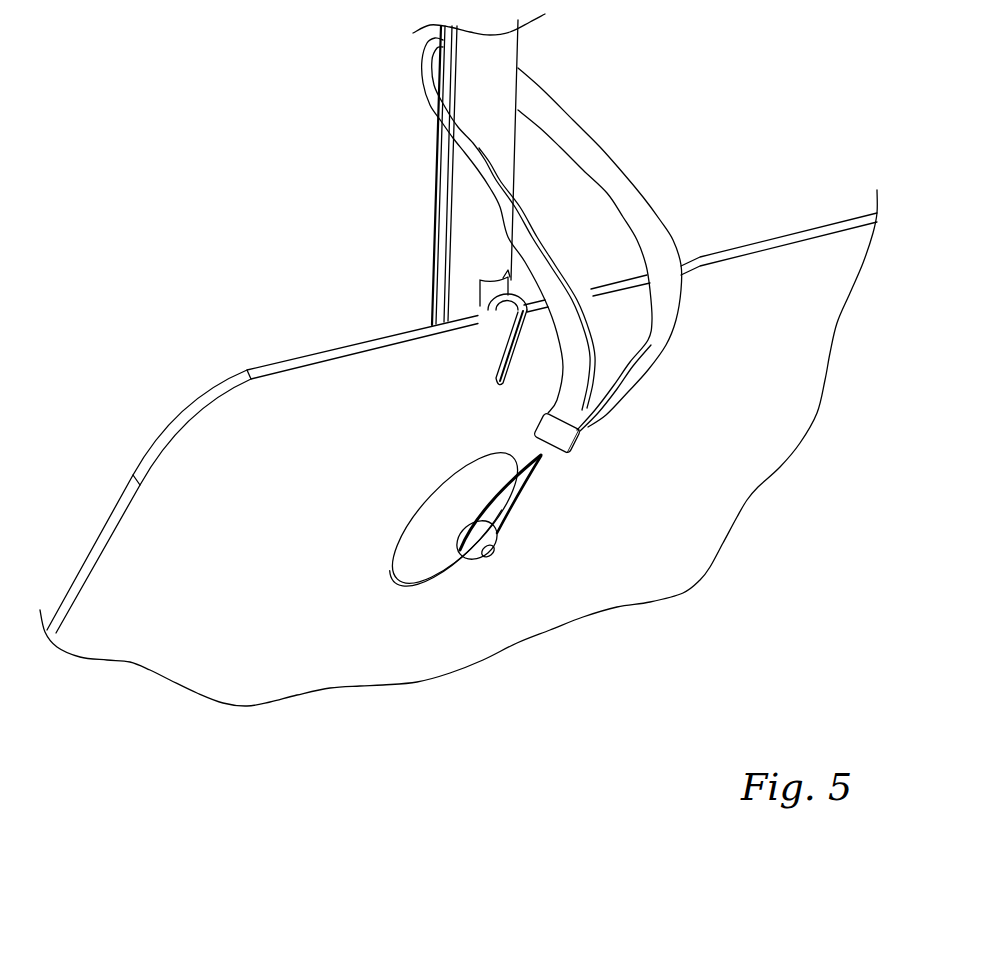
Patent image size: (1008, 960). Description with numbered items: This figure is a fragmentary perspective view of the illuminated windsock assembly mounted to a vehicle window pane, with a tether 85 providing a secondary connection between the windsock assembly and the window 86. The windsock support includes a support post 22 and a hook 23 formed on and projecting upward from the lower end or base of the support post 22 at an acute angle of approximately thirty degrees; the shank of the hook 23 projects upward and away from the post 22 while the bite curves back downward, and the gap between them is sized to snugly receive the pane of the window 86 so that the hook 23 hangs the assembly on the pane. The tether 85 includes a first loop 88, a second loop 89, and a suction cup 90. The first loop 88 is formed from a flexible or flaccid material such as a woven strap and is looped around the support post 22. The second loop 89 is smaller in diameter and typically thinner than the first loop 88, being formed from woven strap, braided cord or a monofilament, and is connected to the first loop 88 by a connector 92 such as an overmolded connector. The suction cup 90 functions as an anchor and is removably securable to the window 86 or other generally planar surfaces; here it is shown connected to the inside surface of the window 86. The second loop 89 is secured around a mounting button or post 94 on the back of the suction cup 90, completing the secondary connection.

The support post 22 is at (432, 218).
The hook 23 is at (494, 374).
The tether 85 is at (604, 407).
The window 86 is at (228, 443).
The first loop 88 is at (652, 326).
The second loop 89 is at (497, 488).
The suction cup 90 is at (418, 578).
The connector 92 is at (566, 447).
The mounting button 94 is at (484, 553).